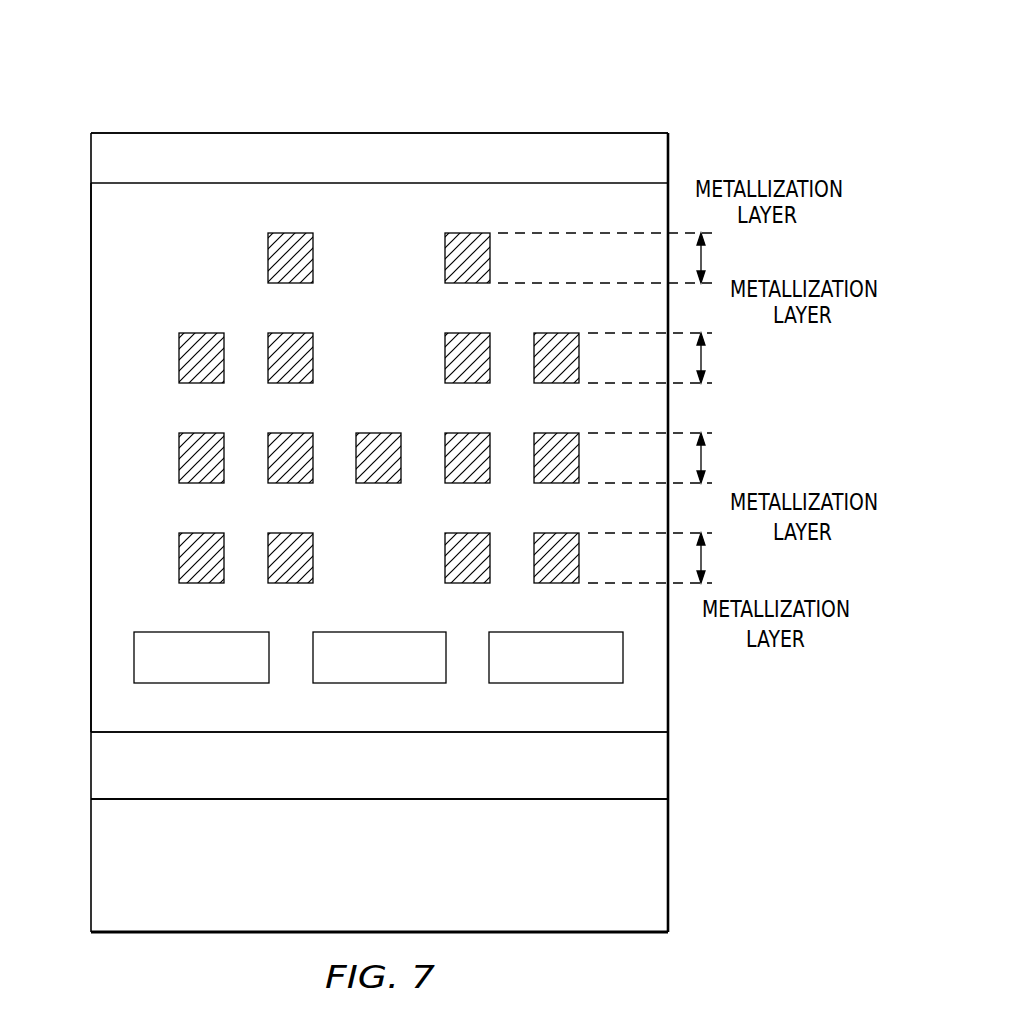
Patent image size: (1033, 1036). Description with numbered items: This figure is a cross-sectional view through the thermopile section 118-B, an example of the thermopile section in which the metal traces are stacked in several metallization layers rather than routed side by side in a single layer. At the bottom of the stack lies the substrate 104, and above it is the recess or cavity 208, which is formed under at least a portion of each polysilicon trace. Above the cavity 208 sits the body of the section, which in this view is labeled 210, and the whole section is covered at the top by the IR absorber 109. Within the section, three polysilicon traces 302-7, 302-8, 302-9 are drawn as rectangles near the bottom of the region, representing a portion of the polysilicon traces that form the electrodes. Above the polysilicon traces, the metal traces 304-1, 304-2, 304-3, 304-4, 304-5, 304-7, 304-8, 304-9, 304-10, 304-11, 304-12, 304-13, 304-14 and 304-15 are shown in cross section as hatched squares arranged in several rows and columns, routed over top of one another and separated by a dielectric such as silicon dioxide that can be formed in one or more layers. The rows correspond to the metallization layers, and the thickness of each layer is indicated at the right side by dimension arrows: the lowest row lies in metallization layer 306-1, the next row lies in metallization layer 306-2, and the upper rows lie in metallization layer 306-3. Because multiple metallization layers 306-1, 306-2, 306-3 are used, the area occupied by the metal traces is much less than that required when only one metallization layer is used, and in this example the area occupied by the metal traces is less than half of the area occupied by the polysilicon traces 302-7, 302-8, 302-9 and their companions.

The section 118-B is at (553, 62).
The IR absorber 109 is at (335, 143).
The interconnect structure 210 is at (103, 461).
The recess or cavity 208 is at (398, 779).
The substrate 104 is at (398, 879).
The polysilicon trace 302-7 is at (548, 683).
The polysilicon trace 302-8 is at (378, 632).
The polysilicon trace 302-9 is at (150, 632).
The metal trace 304-1 is at (558, 333).
The metal trace 304-2 is at (557, 583).
The metal trace 304-3 is at (445, 258).
The metal trace 304-4 is at (557, 433).
The metal trace 304-5 is at (445, 358).
The metal trace 304-7 is at (468, 483).
The metal trace 304-8 is at (383, 433).
The metal trace 304-9 is at (287, 483).
The metal trace 304-10 is at (300, 583).
The metal trace 304-11 is at (290, 333).
The metal trace 304-12 is at (268, 258).
The metal trace 304-13 is at (215, 433).
The metal trace 304-14 is at (215, 533).
The metal trace 304-15 is at (215, 333).
The metallization layer 306-1 is at (701, 555).
The metallization layer 306-2 is at (701, 455).
The metallization layer 306-3 is at (445, 558).